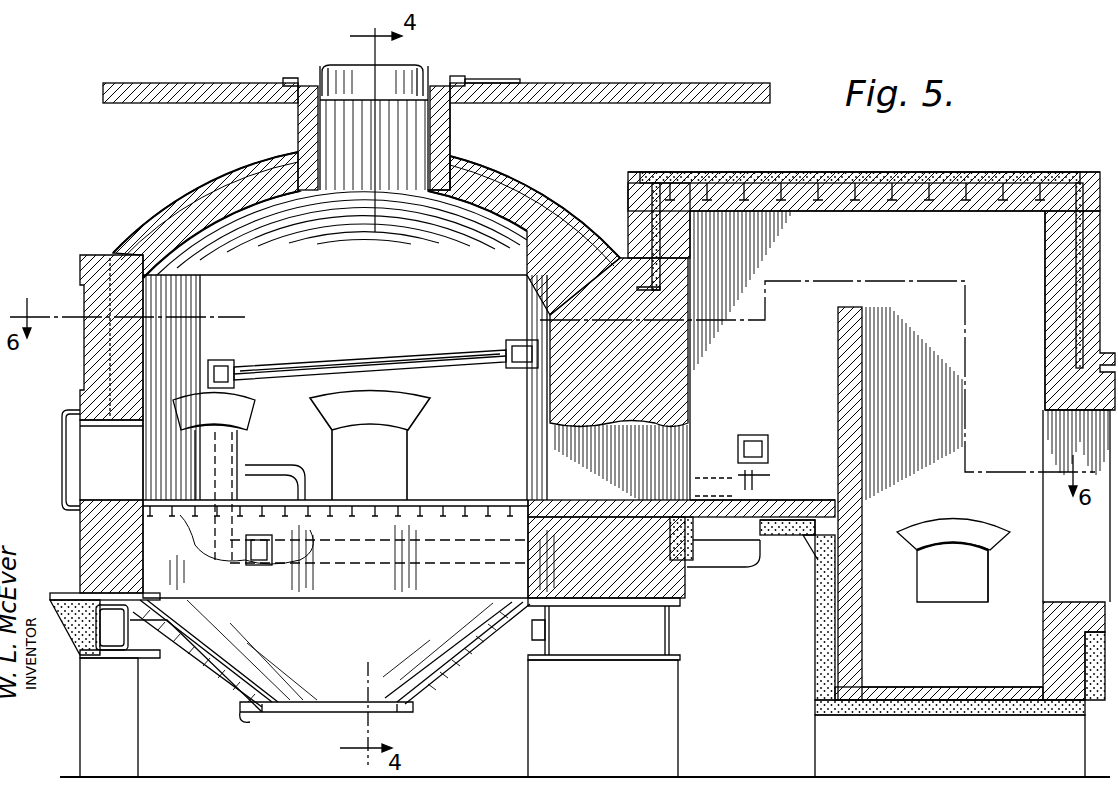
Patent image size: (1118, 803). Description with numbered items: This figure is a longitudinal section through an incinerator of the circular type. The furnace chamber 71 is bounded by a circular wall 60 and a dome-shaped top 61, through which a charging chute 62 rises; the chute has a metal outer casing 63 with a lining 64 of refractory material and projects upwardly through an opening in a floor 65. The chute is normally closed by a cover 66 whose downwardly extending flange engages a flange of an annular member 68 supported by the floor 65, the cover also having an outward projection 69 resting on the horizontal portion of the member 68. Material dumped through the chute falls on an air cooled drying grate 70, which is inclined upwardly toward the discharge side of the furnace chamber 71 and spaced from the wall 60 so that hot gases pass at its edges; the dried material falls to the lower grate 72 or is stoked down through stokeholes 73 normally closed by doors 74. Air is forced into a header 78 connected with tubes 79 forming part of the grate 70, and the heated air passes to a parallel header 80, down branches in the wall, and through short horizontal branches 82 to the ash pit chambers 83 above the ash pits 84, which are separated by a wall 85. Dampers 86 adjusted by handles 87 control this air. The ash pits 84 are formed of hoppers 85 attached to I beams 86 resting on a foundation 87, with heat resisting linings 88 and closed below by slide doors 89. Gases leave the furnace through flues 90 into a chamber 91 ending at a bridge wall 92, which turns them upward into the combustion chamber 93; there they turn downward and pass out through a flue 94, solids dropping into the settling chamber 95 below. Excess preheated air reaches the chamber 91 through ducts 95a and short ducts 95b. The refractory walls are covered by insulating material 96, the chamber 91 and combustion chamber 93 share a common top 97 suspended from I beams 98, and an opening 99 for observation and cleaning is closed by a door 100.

The circular wall 60 is at (118, 366).
The dome-shaped top 61 is at (545, 212).
The charging chute 62 is at (292, 128).
The metal outer casing 63 is at (452, 122).
The lining 64 is at (452, 147).
The floor 65 is at (588, 95).
The cover 66 is at (343, 66).
The annular member 68 is at (476, 84).
The outward projection 69 is at (442, 78).
The air cooled drying grate 70 is at (415, 350).
The furnace chamber 71 is at (345, 387).
The lower grate 72 is at (440, 500).
The stokeholes 73 is at (96, 445).
The doors 74 is at (64, 447).
The header 78 is at (518, 340).
The tubes 79 is at (350, 362).
The header 80 is at (228, 362).
The short horizontal branches 82 is at (232, 555).
The ash pit chambers 83 is at (290, 567).
The ash pits 84 is at (326, 656).
The wall / outer casings or hoppers 85 is at (150, 540).
The dampers / I beams 86 is at (150, 642).
The handles / foundation 87 is at (730, 482).
The heat resisting linings 88 is at (232, 672).
The doors 89 is at (322, 714).
The flues 90 is at (619, 379).
The chamber 91 is at (762, 442).
The bridge wall 92 is at (838, 370).
The combustion chamber 93 is at (1052, 296).
The flue 94 is at (1076, 555).
The settling chamber 95 is at (877, 616).
The ducts 95a is at (435, 565).
The short ducts 95b is at (768, 450).
The insulating material 96 is at (962, 178).
The common top 97 is at (905, 215).
The I beams 98 is at (786, 178).
The opening 99 is at (916, 588).
The door 100 is at (990, 578).